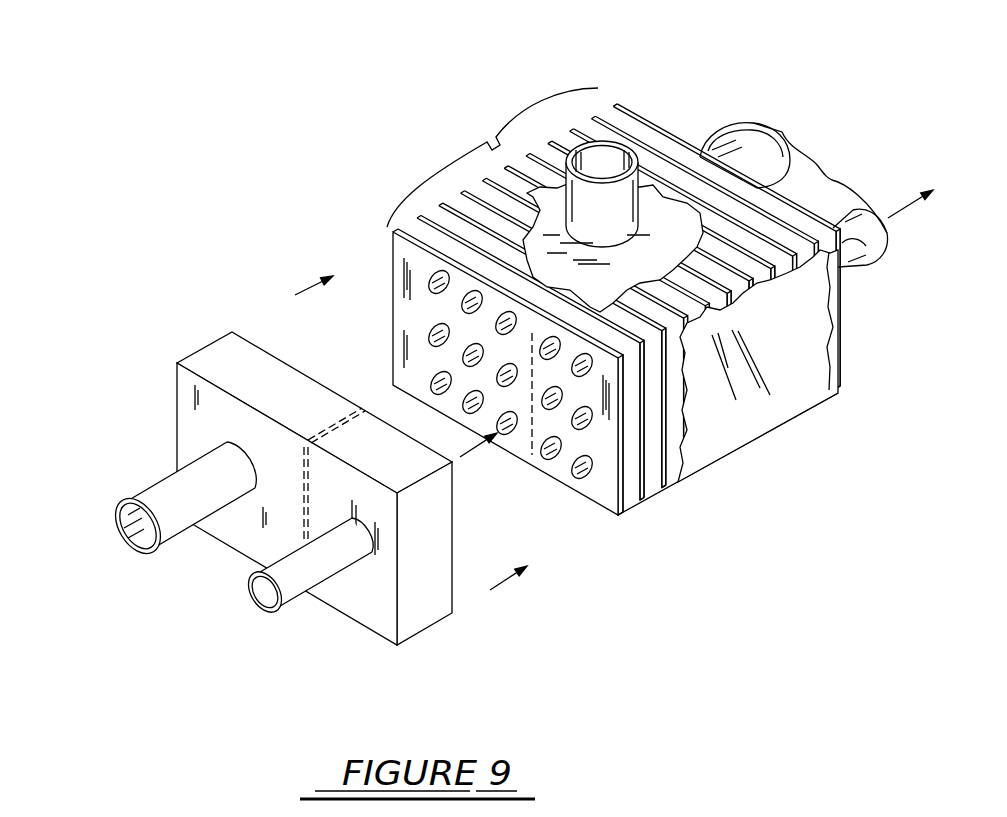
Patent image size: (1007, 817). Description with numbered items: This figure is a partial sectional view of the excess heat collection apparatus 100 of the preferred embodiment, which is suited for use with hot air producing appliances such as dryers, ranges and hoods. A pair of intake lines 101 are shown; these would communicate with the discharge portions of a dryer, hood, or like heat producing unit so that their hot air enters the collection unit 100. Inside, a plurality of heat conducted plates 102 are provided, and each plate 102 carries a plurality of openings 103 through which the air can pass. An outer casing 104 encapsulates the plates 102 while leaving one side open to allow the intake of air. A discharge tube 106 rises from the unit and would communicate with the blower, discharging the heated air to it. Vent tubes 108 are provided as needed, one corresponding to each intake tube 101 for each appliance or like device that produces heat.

The excess heat collection apparatus 100 is at (487, 139).
The intake lines 101 is at (187, 533).
The heat conducted plates 102 is at (593, 493).
The openings 103 is at (544, 454).
The outer casing 104 is at (735, 438).
The discharge tube 106 is at (605, 233).
The vent tubes 108 is at (815, 176).